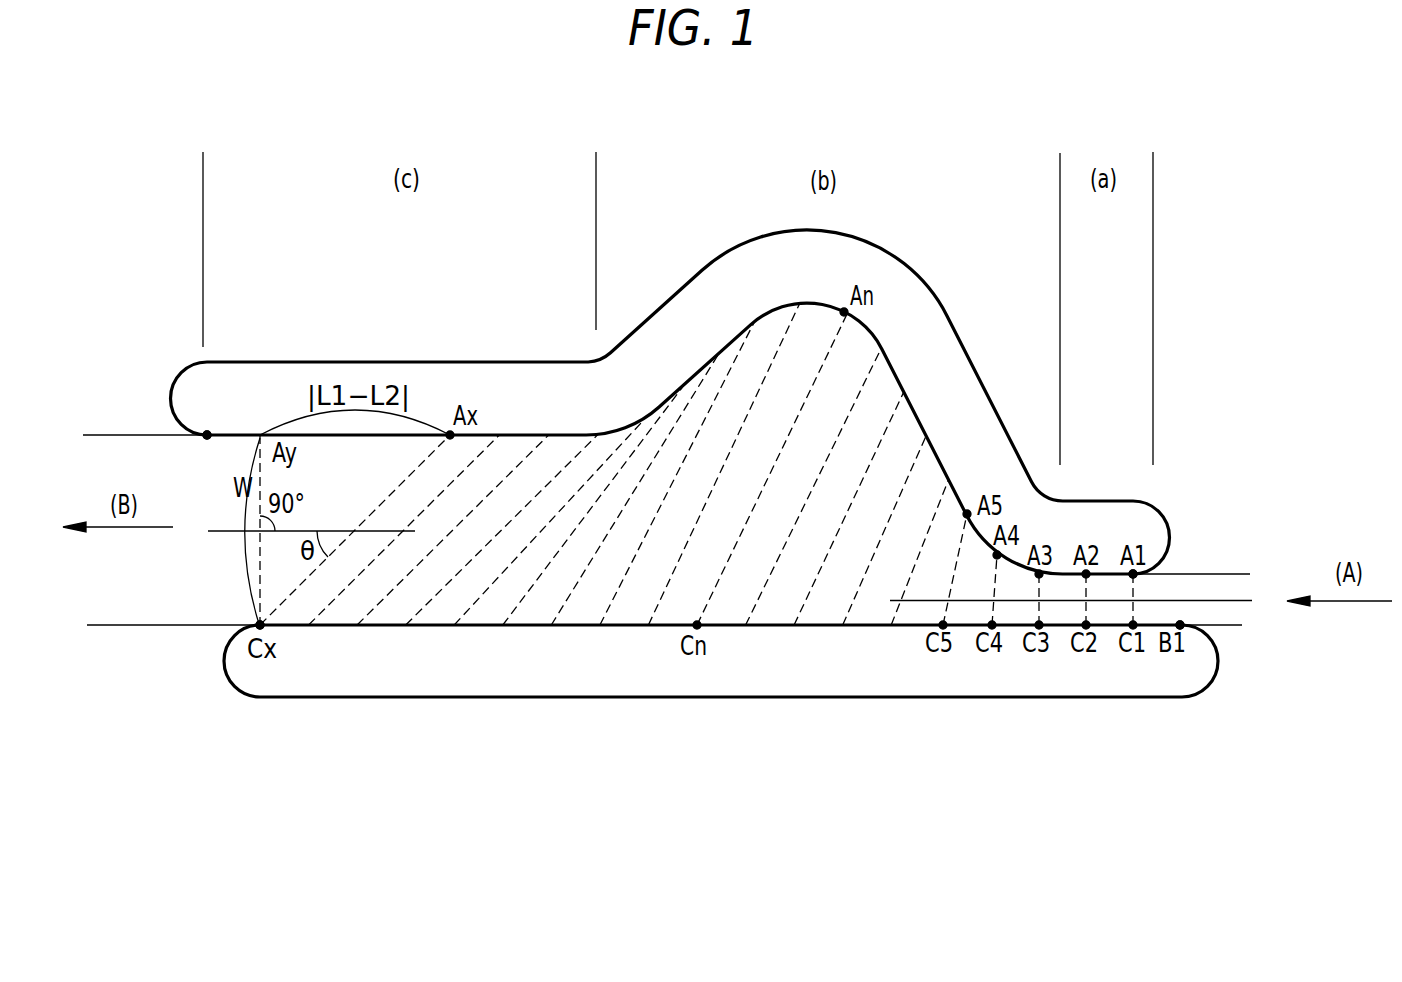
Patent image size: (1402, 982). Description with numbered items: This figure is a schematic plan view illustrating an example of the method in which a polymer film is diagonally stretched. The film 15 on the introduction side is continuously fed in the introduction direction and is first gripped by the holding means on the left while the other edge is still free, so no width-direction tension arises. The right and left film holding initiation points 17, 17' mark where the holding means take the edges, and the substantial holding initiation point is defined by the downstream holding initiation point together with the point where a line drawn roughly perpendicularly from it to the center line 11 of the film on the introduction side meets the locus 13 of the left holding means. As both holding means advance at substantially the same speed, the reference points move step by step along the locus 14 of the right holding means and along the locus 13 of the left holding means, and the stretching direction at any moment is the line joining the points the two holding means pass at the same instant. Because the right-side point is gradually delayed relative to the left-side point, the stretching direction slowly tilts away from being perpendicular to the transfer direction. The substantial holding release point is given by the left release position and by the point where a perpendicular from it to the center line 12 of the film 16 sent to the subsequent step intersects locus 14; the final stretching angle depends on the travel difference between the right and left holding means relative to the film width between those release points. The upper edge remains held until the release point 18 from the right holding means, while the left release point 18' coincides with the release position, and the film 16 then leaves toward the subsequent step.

The center line of a film on an introduction side 11 is at (1233, 602).
The center line of a film sent to a subsequent step 12 is at (311, 518).
The locus of a film holding means (left) 13 is at (610, 626).
The locus of a film holding means (right) 14 is at (563, 431).
The film on an introduction side 15 is at (1203, 588).
The film sent to a subsequent step 16 is at (145, 458).
The right film holding initiation point 17 is at (1135, 544).
The left film holding initiation point 17' is at (1176, 652).
The release point from right film holding means 18 is at (210, 420).
The release point from left film holding means 18' is at (265, 654).